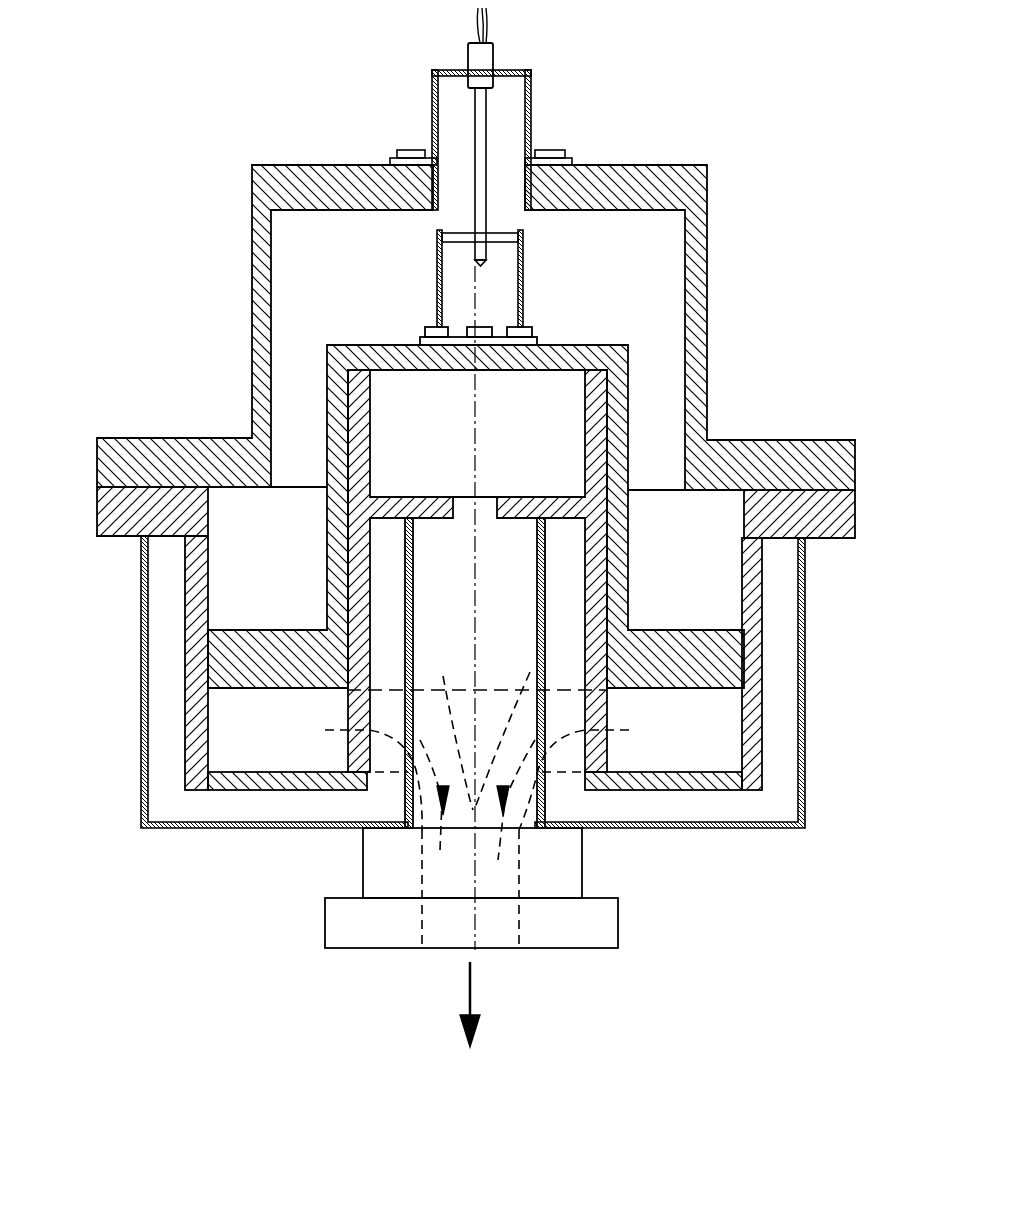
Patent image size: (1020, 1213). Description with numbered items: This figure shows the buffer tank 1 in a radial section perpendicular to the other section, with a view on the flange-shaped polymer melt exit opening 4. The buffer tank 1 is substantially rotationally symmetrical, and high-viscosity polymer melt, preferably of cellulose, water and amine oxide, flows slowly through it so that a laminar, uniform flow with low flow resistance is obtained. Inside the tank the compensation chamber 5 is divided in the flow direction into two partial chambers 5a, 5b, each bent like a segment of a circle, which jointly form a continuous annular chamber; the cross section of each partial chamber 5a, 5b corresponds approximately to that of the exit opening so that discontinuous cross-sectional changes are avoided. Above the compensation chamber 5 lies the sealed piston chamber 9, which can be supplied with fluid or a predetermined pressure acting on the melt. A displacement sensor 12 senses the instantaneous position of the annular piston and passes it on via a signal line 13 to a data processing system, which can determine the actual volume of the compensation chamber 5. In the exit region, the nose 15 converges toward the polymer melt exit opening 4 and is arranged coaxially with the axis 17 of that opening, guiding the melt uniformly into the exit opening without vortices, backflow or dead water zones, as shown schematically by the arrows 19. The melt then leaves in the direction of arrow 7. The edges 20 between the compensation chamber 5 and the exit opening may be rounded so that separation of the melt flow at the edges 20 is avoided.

The buffer tank 1 is at (160, 131).
The polymer melt exit opening 4 is at (496, 870).
The compensation chamber 5 is at (485, 638).
The partial chamber 5a is at (245, 725).
The partial chamber 5b is at (735, 730).
The arrow 7 is at (468, 993).
The piston chamber 9 is at (655, 290).
The displacement sensor 12 is at (488, 230).
The signal line 13 is at (490, 33).
The nose 15 is at (456, 686).
The axis 17 is at (790, 598).
The arrows 19 is at (477, 844).
The edges 20 is at (565, 800).